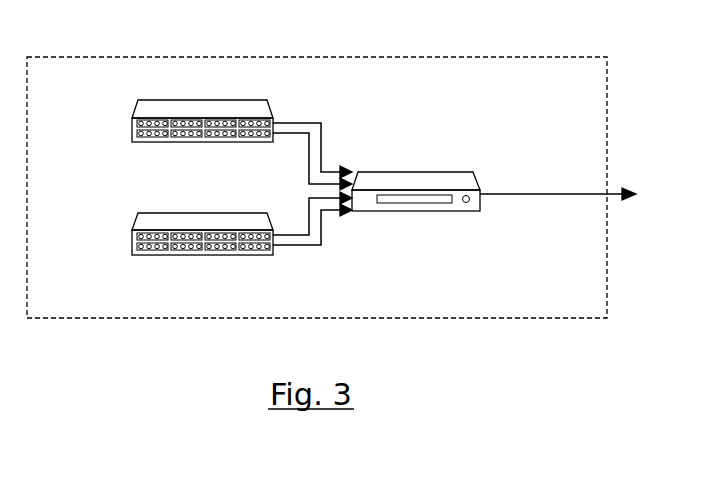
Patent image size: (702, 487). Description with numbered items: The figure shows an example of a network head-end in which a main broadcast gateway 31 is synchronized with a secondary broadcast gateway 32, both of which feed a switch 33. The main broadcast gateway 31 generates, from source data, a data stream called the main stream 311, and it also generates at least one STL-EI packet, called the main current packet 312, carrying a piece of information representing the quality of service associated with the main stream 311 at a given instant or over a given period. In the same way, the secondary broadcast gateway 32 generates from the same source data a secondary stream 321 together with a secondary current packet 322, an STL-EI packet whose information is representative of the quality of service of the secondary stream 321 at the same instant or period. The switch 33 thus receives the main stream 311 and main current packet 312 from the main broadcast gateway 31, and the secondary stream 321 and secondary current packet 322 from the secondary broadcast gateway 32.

The main broadcast gateway 31 is at (210, 110).
The secondary broadcast gateway 32 is at (213, 250).
The switch 33 is at (415, 180).
The main stream 311 is at (308, 160).
The main current packet 312 is at (318, 123).
The secondary stream 321 is at (308, 212).
The secondary current packet 322 is at (313, 247).